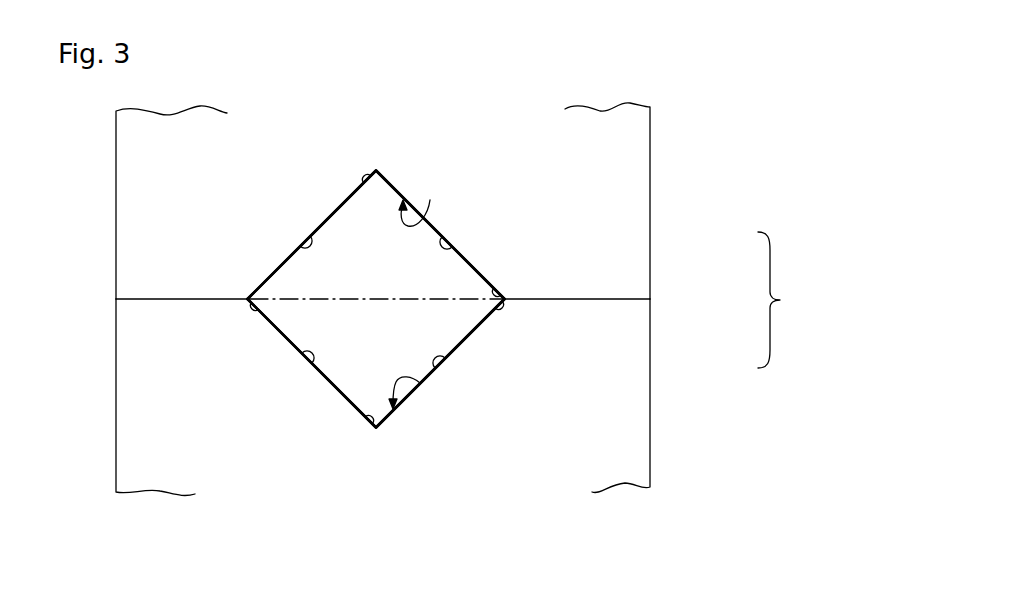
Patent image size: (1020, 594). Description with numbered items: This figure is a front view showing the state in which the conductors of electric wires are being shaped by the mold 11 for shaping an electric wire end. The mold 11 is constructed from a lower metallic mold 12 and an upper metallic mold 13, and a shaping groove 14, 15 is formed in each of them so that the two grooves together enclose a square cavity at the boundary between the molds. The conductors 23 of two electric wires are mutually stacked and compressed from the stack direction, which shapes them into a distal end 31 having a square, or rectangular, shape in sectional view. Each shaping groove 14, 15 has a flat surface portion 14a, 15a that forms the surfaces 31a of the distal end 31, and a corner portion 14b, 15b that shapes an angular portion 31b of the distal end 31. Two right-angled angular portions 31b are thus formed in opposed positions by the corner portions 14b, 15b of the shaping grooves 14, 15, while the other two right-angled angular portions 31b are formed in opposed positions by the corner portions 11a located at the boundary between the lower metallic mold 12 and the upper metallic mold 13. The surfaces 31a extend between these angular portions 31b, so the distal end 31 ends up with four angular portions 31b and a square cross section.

The mold for shaping electric wire end 11 is at (785, 300).
The corner portions 11a is at (494, 290).
The lower metallic mold 12 is at (650, 342).
The upper metallic mold 13 is at (650, 242).
The shaping groove 14 is at (413, 393).
The flat surface portion 14a is at (313, 367).
The corner portion 14b is at (363, 418).
The shaping groove 15 is at (430, 222).
The flat surface portion 15a is at (301, 248).
The corner portion 15b is at (362, 176).
The conductors 23 is at (467, 278).
The distal end 31 is at (334, 393).
The surfaces 31a is at (430, 200).
The angular portions 31b is at (252, 298).